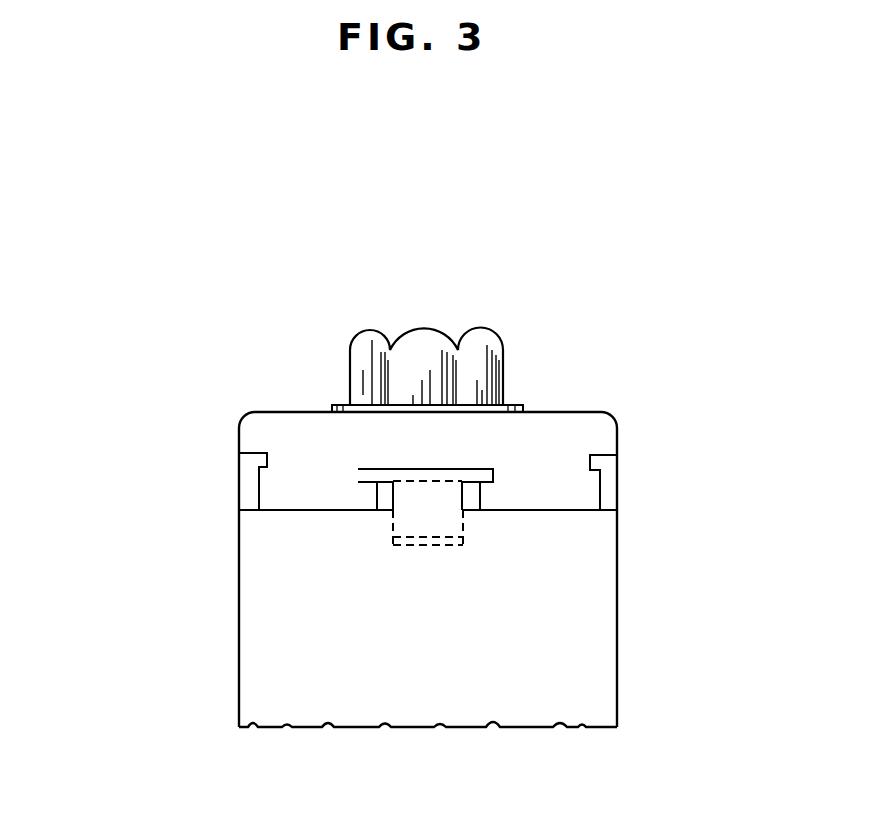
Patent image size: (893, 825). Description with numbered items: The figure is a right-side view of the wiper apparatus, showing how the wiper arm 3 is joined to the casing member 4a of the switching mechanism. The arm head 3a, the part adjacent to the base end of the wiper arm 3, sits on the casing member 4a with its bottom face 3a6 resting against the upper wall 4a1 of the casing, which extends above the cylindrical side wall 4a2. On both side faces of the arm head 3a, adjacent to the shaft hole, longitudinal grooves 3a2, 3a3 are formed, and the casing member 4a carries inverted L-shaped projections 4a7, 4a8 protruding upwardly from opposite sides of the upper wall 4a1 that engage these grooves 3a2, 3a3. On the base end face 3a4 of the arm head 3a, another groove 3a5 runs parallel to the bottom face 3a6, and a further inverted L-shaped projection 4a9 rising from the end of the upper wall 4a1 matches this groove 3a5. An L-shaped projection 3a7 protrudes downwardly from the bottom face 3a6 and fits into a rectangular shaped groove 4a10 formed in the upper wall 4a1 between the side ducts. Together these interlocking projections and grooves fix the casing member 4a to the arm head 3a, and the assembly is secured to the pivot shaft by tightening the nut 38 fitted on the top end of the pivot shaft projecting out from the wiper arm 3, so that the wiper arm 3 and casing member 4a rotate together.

The wiper arm 3 is at (291, 410).
The nut 38 is at (350, 343).
The arm head 3a is at (543, 427).
The groove 3a2 is at (262, 467).
The groove 3a3 is at (590, 458).
The base end face 3a4 is at (417, 463).
The groove 3a5 is at (380, 475).
The bottom face 3a6 is at (530, 513).
The L-shaped projection 3a7 is at (418, 540).
The casing member 4a is at (618, 687).
The upper wall 4a1 is at (553, 510).
The cylindrical side wall 4a2 is at (517, 677).
The inverted L-shaped projection 4a7 is at (239, 462).
The inverted L-shaped projection 4a8 is at (612, 481).
The inverted L-shaped projection 4a9 is at (442, 470).
The rectangular shaped groove 4a10 is at (448, 545).